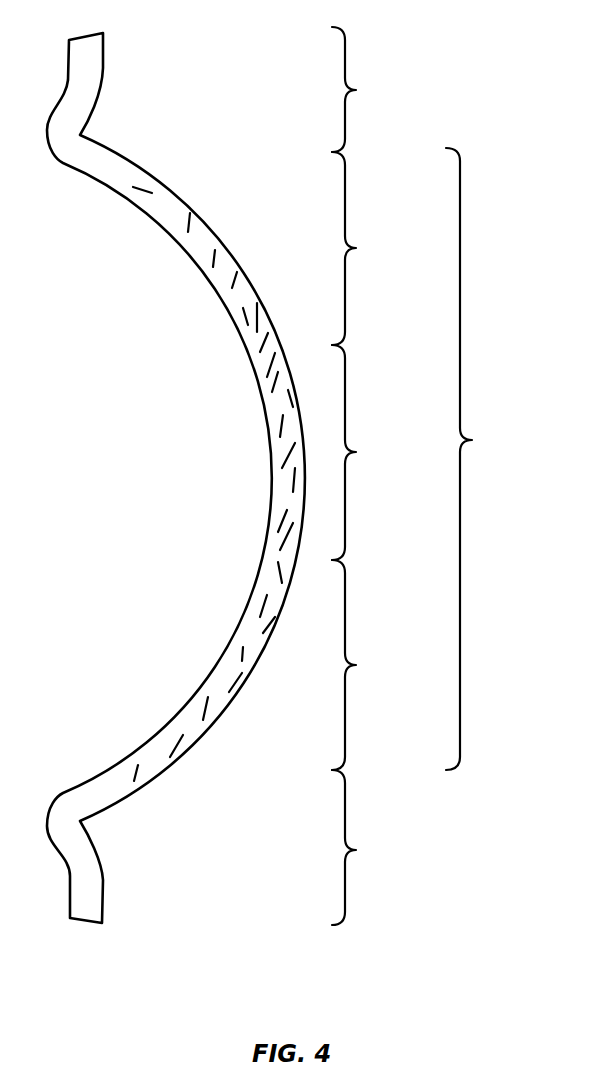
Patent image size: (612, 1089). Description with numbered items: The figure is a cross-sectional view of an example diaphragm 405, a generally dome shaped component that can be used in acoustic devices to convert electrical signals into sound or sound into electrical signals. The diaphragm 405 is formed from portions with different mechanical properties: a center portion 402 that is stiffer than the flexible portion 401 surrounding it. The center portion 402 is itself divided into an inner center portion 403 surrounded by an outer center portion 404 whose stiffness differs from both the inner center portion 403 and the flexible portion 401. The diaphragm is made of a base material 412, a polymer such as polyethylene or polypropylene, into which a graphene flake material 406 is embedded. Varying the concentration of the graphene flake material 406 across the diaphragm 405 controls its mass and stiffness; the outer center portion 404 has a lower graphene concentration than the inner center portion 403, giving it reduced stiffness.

The flexible portion 401 is at (363, 476).
The center portion 402 is at (478, 459).
The inner center portion 403 is at (363, 452).
The outer center portion 404 is at (363, 461).
The diaphragm 405 is at (543, 103).
The graphene flake material 406 is at (270, 360).
The base material 412 is at (172, 192).